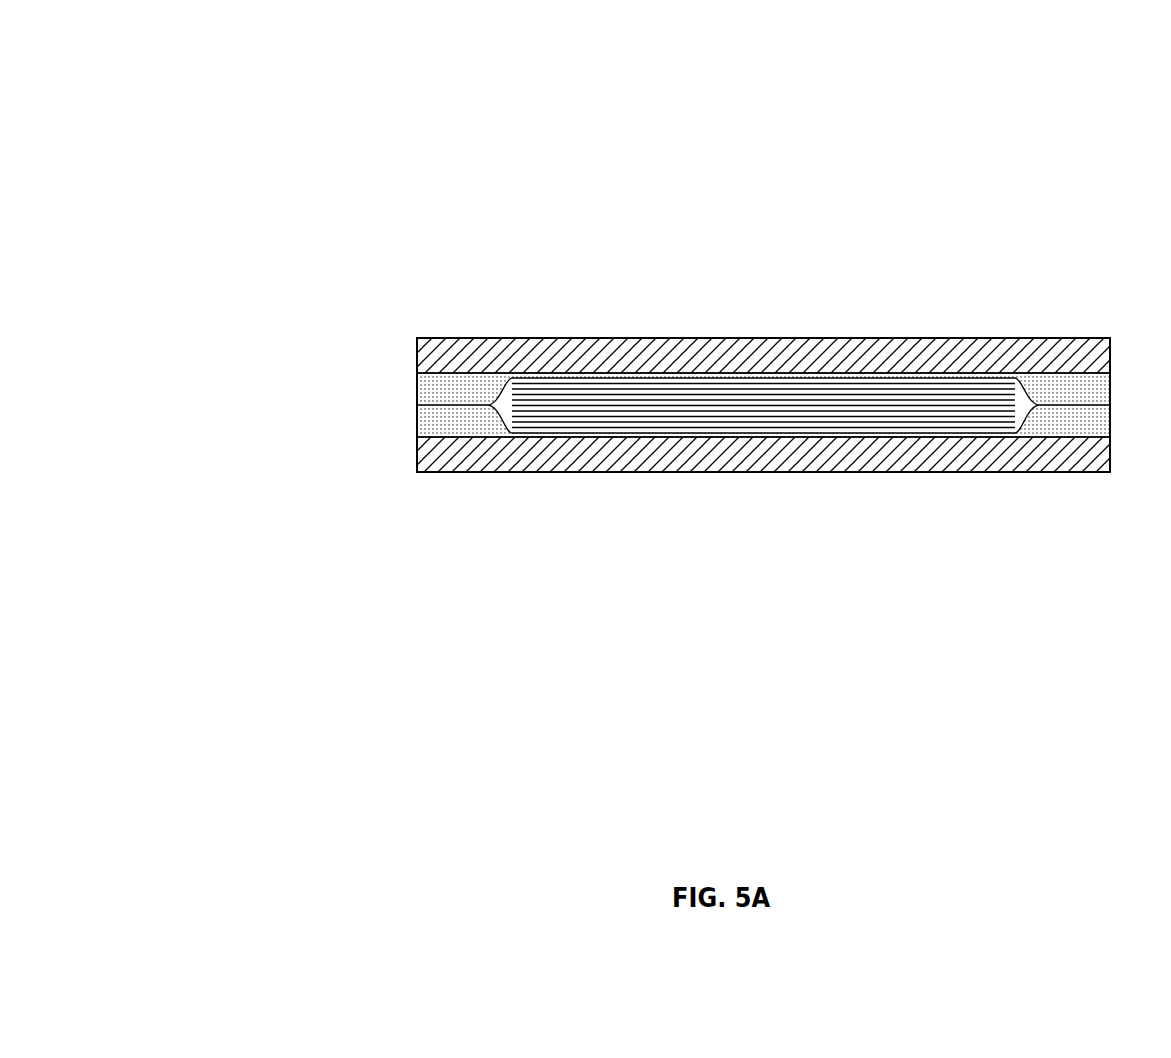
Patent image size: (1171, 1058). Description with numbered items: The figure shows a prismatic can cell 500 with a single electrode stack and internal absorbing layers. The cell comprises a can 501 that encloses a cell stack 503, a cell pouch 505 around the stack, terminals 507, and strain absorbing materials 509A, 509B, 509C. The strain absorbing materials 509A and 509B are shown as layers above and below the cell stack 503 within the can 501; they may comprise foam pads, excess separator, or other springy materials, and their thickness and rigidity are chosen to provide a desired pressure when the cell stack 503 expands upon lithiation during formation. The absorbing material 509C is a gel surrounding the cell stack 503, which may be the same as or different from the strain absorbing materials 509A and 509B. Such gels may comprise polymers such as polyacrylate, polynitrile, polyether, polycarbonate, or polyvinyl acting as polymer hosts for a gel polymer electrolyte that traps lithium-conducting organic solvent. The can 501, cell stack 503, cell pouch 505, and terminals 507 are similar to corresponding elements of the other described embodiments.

The prismatic can cell 500 is at (333, 127).
The can 501 is at (1112, 380).
The cell stack 503 is at (952, 418).
The cell pouch 505 is at (1029, 412).
The terminals 507 is at (419, 378).
The strain absorbing material 509A is at (955, 362).
The strain absorbing material 509B is at (792, 455).
The absorbing material 509C is at (418, 412).